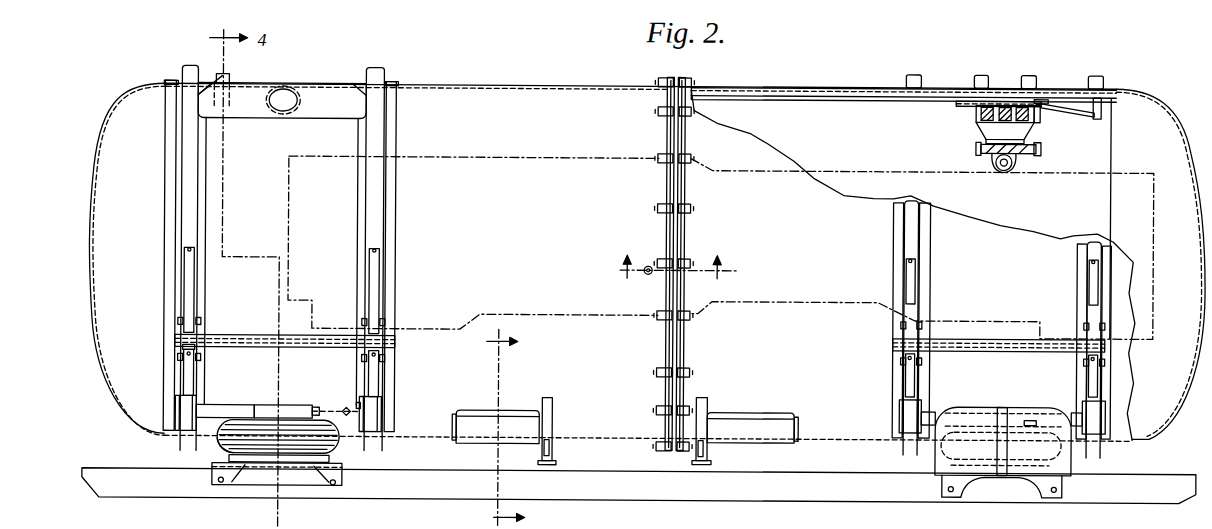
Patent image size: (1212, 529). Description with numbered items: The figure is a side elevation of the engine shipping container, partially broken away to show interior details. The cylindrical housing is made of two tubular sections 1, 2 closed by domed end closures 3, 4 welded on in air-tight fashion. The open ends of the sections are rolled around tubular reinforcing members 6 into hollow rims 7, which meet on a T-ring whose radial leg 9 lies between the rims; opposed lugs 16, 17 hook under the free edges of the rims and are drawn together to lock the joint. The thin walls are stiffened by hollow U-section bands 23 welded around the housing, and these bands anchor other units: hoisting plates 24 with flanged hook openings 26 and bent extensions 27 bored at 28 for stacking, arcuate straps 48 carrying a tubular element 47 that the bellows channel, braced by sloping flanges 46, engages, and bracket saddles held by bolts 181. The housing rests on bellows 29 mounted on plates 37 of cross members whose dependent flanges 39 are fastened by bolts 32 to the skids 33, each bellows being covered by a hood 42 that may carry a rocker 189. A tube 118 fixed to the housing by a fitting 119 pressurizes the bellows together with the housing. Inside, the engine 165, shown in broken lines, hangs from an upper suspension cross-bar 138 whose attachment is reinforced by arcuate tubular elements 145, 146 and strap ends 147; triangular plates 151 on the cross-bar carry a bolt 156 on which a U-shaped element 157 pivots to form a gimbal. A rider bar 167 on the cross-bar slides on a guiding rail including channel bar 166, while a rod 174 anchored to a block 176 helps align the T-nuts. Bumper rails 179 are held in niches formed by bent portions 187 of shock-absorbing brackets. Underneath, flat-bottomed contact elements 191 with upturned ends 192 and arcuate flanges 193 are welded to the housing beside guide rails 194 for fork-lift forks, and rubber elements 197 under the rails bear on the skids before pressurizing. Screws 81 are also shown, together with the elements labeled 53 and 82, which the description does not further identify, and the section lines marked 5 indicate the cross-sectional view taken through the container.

The tubular section 1 is at (536, 86).
The tubular section 2 is at (790, 87).
The domed end closure 3 is at (114, 114).
The domed end closure 4 is at (1180, 135).
The section line 5- 5 is at (513, 429).
The tubular reinforcing member 6 is at (671, 261).
The hollow rim 7 is at (666, 223).
The leg 9 is at (677, 180).
The lug 16 is at (662, 204).
The lug 17 is at (686, 207).
The hollow band 23 is at (190, 186).
The plate 24 is at (345, 90).
The inwardly flanged opening 26 is at (283, 92).
The bent extension 27 is at (230, 82).
The bore 28 is at (226, 76).
The bellows 29 is at (299, 402).
The bolt 32 is at (345, 485).
The skid 33 is at (146, 472).
The plate 37 is at (230, 461).
The dependent flange 39 is at (280, 478).
The hood 42 is at (1072, 466).
The sloping flange 46 is at (270, 410).
The tubular element 47 is at (226, 408).
The arcuate strap 48 is at (190, 405).
The spring plate 53 is at (220, 440).
The screw 81 is at (191, 251).
The slide 82 is at (190, 283).
The tube 118 is at (320, 409).
The fitting 119 is at (380, 398).
The cross-bar 138 is at (980, 111).
The arcuate tubular element 145 is at (1027, 73).
The arcuate tubular element 146 is at (980, 73).
The upwardly turned end 147 is at (1003, 86).
The plate 151 is at (1039, 114).
The bolt 156 is at (975, 146).
The U-shaped element 157 is at (1010, 167).
The engine 165 is at (885, 173).
The channel bar 166 is at (758, 98).
The rider bar 167 is at (1040, 97).
The rod 174 is at (1075, 110).
The block 176 is at (1100, 108).
The bumper rail 179 is at (315, 336).
The bolt 181 is at (186, 362).
The bent portion 187 is at (178, 323).
The rocker 189 is at (1005, 404).
The contact element 191 is at (470, 444).
The upwardly bent end 192 is at (516, 426).
The arcuate flange 193 is at (510, 410).
The guide rail 194 is at (553, 448).
The rubber element 197 is at (557, 462).